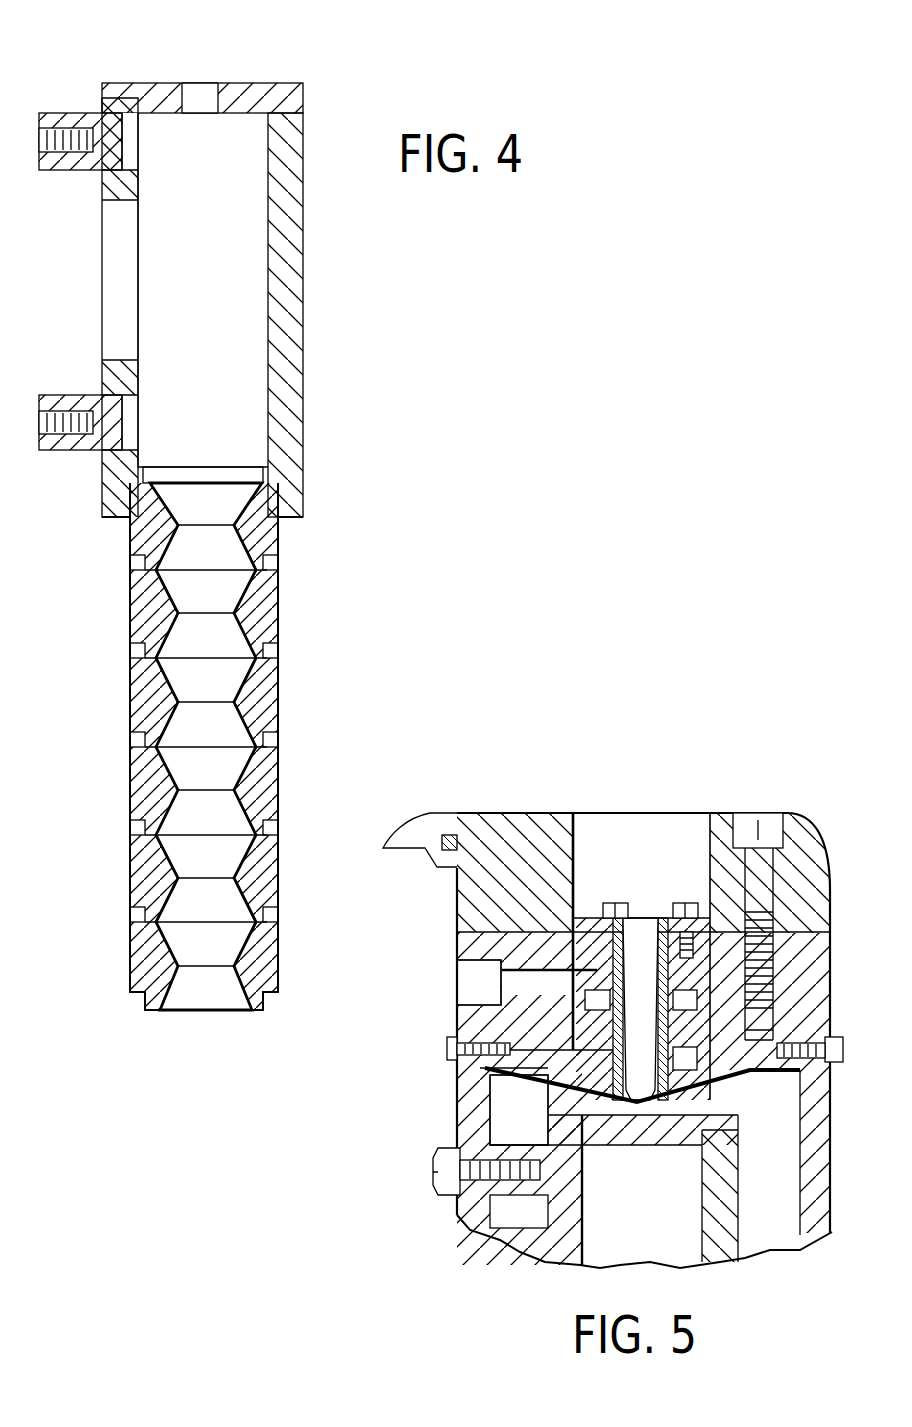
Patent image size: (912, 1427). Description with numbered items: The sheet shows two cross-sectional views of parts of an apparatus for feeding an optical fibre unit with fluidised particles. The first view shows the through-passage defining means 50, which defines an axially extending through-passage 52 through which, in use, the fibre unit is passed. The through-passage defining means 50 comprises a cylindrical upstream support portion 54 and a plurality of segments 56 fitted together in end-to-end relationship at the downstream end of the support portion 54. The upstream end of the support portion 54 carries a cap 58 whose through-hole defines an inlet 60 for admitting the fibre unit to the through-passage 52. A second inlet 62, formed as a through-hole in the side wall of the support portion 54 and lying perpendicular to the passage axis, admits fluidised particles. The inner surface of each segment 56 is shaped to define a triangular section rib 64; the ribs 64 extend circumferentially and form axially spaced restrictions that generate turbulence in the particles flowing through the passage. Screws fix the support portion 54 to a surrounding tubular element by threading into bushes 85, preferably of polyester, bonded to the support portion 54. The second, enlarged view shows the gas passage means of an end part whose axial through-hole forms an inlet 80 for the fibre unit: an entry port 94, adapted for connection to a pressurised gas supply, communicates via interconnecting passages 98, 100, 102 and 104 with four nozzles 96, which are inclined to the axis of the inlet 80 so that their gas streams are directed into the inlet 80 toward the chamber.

In FIG. 4, the through-passage defining means 50 is at (310, 608).
In FIG. 4, the through-passage 52 is at (247, 340).
In FIG. 4, the cylindrical upstream support portion 54 is at (305, 222).
In FIG. 4, the segments 56 is at (140, 945).
In FIG. 4, the cap 58 is at (268, 83).
In FIG. 4, the inlet 60 is at (197, 93).
In FIG. 4, the inlet 62 is at (102, 290).
In FIG. 4, the triangular section rib 64 is at (175, 595).
In FIG. 4, the bushes 85 is at (80, 113).
In FIG. 5, the inlet 80 is at (635, 945).
In FIG. 5, the entry port 94 is at (470, 978).
In FIG. 5, the nozzles 96 is at (655, 1065).
In FIG. 5, the interconnecting passage 98 is at (525, 975).
In FIG. 5, the interconnecting passage 100 is at (583, 1028).
In FIG. 5, the interconnecting passage 102 is at (680, 1000).
In FIG. 5, the interconnecting passage 104 is at (597, 1072).